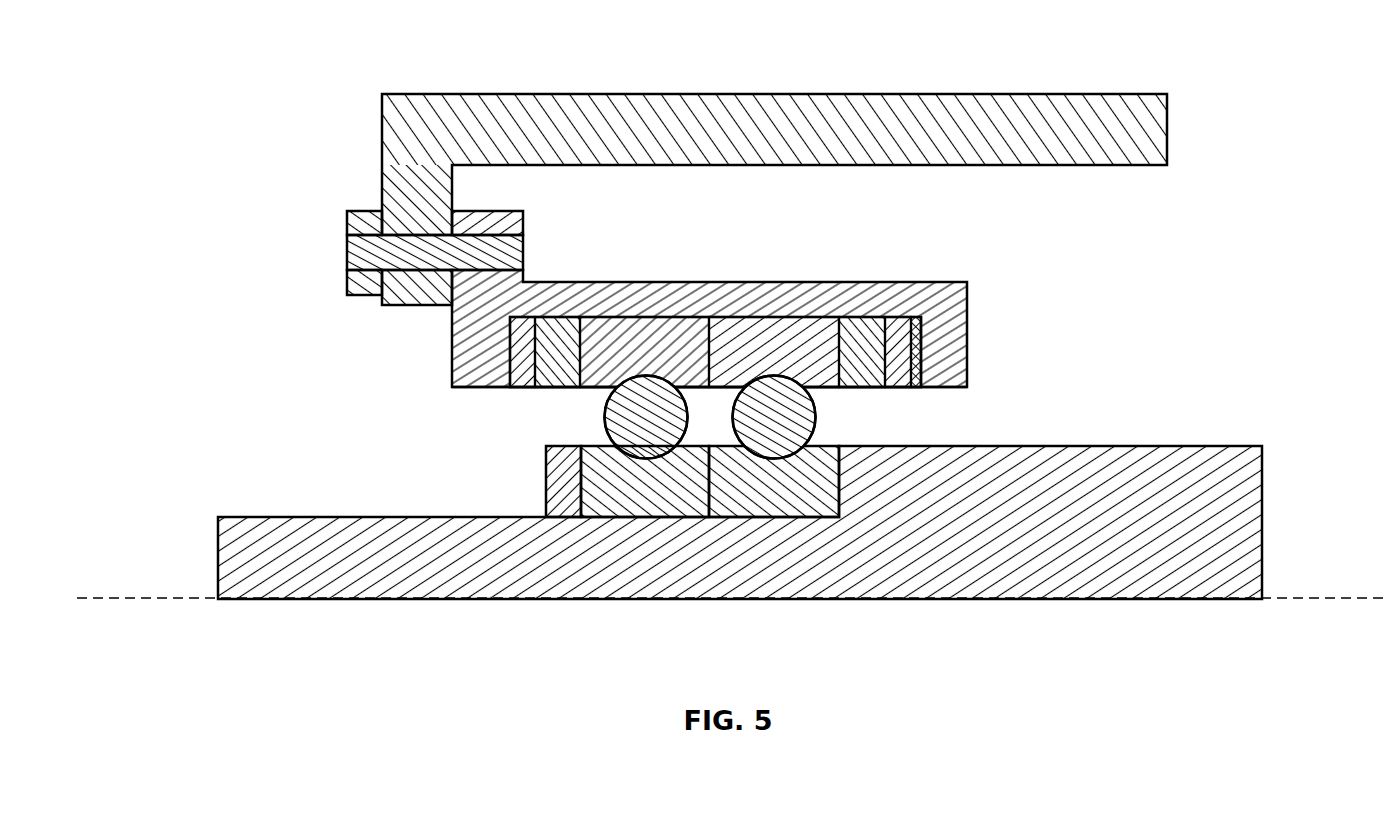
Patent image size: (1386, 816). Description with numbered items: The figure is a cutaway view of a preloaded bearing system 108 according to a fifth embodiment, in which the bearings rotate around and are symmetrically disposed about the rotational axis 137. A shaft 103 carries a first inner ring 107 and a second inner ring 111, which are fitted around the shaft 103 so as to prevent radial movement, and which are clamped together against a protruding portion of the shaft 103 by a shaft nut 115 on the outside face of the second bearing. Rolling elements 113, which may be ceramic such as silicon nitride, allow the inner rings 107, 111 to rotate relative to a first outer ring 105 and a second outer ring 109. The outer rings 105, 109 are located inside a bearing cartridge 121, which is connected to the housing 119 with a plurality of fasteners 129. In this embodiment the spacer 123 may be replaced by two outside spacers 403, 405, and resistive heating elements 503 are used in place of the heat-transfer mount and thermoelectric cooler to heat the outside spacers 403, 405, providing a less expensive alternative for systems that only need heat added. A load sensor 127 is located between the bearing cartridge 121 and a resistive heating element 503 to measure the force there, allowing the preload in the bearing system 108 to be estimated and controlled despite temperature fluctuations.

The preloaded bearing system 108 is at (258, 38).
The housing 119 is at (1155, 140).
The fasteners 129 is at (346, 283).
The bearing cartridge 121 is at (683, 290).
The outside spacer 403 is at (553, 360).
The spacer 123 is at (612, 330).
The first outer ring 105 is at (737, 328).
The outside spacer 405 is at (863, 330).
The resistive heating element 503 is at (900, 333).
The load sensor 127 is at (923, 357).
The second outer ring 109 is at (615, 376).
The rolling elements 113 is at (615, 426).
The shaft 103 is at (1196, 462).
The shaft nut 115 is at (548, 505).
The second inner ring 111 is at (587, 468).
The first inner ring 107 is at (820, 450).
The rotational axis 137 is at (140, 597).